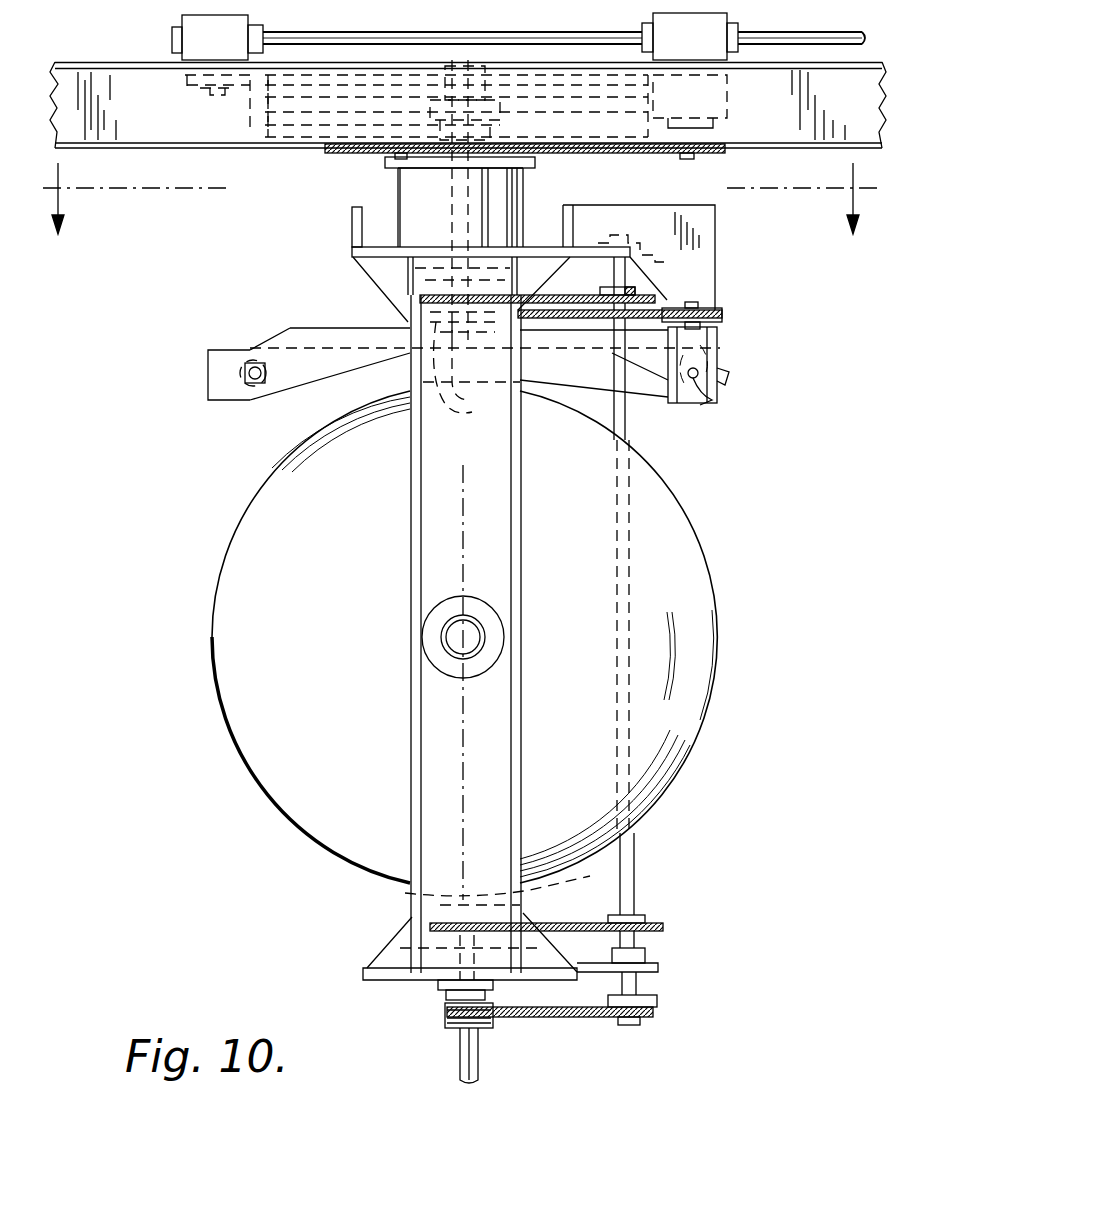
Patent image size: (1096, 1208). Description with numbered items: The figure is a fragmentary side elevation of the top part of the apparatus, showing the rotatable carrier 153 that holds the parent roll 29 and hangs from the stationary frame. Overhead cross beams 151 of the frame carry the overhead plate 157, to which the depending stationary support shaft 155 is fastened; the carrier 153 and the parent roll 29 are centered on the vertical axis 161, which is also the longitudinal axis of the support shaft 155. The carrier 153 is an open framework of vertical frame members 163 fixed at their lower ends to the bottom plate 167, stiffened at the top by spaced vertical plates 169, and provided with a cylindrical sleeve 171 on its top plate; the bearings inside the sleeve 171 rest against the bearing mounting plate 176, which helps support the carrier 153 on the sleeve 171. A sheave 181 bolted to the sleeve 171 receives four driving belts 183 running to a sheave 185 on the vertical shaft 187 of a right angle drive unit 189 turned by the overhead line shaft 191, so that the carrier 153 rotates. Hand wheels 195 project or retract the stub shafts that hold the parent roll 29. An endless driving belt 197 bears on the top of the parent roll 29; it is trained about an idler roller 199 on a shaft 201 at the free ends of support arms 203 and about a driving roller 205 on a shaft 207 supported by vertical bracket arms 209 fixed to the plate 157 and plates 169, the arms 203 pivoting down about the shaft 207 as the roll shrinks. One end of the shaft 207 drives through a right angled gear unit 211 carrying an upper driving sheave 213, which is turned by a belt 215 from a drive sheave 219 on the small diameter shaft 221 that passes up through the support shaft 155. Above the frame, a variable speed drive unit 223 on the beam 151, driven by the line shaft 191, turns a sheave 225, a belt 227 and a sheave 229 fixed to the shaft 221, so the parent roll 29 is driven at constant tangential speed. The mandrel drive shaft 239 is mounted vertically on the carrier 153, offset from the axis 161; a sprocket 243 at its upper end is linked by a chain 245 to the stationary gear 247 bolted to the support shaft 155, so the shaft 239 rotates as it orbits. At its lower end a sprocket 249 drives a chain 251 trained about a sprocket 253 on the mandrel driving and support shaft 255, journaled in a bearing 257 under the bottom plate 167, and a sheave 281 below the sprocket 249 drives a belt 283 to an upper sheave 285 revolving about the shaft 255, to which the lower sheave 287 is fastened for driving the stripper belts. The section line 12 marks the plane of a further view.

The section line 12- 12 is at (456, 195).
The parent roll 29 is at (212, 640).
The cross beam 151 is at (83, 138).
The rotatable carrier 153 is at (385, 519).
The support shaft 155 is at (394, 78).
The overhead plate 157 is at (347, 78).
The vertical axis 161 is at (463, 758).
The vertical frame members 163 is at (432, 582).
The bottom plate 167 is at (372, 970).
The vertical plates 169 is at (352, 213).
The cylindrical sleeve 171 is at (403, 191).
The bearing mounting plate 176 is at (358, 274).
The sheave 181 is at (342, 157).
The driving belts 183 is at (633, 155).
The sheave 185 is at (722, 155).
The shaft 187 is at (692, 118).
The right angle drive unit 189 is at (692, 46).
The line shaft 191 is at (482, 32).
The hand wheels 195 is at (500, 610).
The driving belt 197 is at (290, 402).
The idler roller 199 is at (247, 383).
The shaft 201 is at (252, 360).
The support arms 203 is at (290, 330).
The driving roller 205 is at (729, 386).
The shaft 207 is at (703, 400).
The vertical bracket arms 209 is at (715, 268).
The right angled gear unit 211 is at (722, 348).
The upper driving sheave 213 is at (722, 316).
The belt 215 is at (567, 320).
The drive sheave 219 is at (442, 412).
The small diameter shaft 221 is at (452, 390).
The variable speed drive unit 223 is at (182, 22).
The sheave 225 is at (196, 86).
The belt 227 is at (257, 90).
The sheave 229 is at (492, 84).
The mandrel drive shaft 239 is at (632, 522).
The sprocket 243 is at (657, 297).
The chain 245 is at (578, 300).
The stationary gear 247 is at (418, 299).
The sprocket 249 is at (652, 917).
The chain 251 is at (608, 900).
The sprocket 253 is at (440, 905).
The mandrel driving and support shaft 255 is at (420, 948).
The bearing 257 is at (493, 990).
The sheave 281 is at (657, 1000).
The belt 283 is at (578, 1018).
The upper sheave 285 is at (444, 1005).
The lower sheave 287 is at (438, 1028).